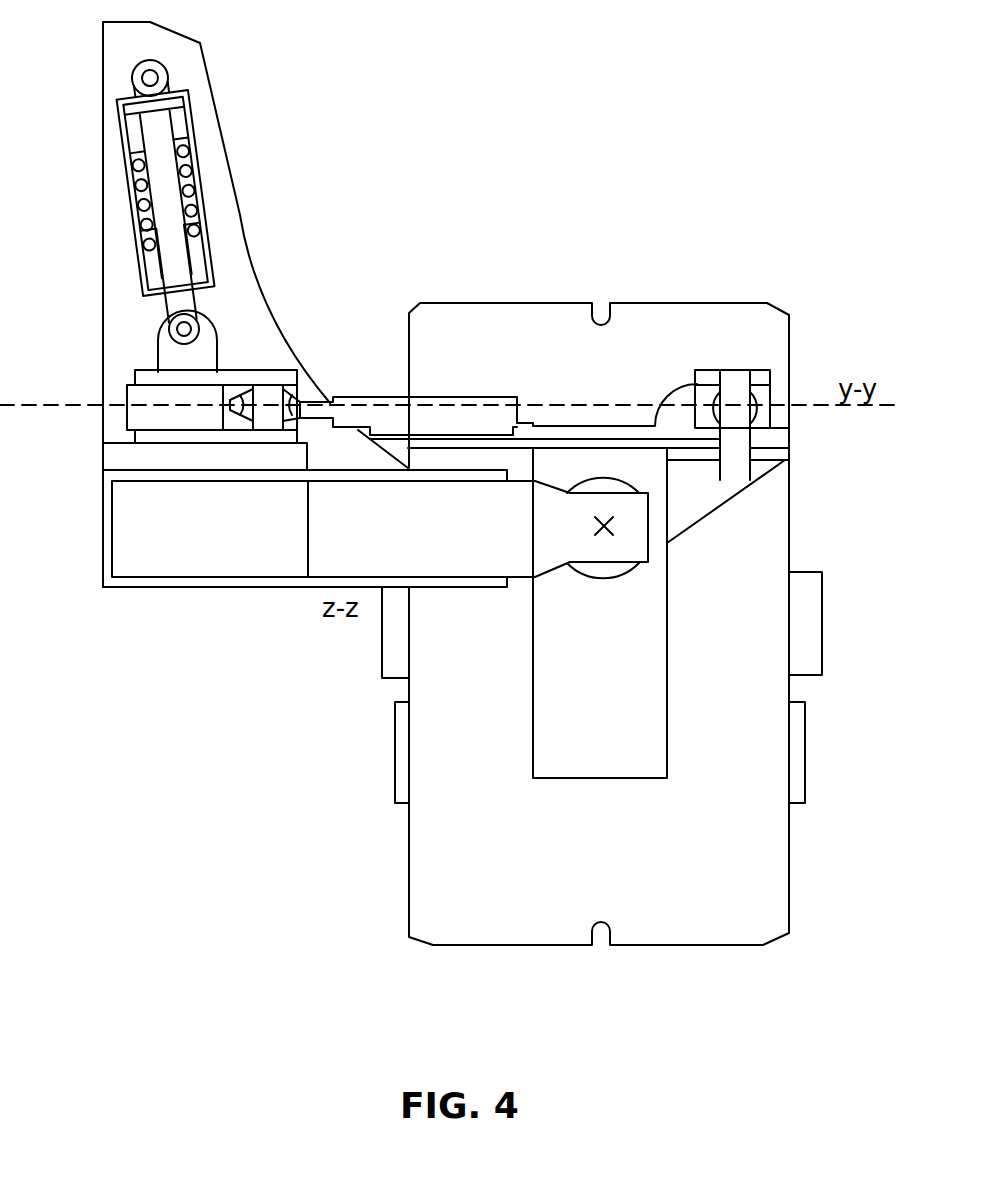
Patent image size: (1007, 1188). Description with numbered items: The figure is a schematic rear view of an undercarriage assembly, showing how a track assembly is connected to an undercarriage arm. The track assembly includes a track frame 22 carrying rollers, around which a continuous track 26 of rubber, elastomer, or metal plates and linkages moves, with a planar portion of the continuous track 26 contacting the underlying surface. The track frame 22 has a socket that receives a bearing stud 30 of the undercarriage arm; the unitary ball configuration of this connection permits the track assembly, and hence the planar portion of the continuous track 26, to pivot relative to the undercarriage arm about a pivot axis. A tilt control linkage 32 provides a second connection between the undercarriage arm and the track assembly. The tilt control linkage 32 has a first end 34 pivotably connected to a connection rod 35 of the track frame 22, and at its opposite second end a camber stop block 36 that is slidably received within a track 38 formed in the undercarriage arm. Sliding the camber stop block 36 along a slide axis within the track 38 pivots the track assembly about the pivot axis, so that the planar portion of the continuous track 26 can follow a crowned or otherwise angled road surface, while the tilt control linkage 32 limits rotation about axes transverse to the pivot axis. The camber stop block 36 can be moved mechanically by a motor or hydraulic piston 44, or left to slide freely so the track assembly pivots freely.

The track frame 22 is at (533, 772).
The continuous track 26 is at (453, 303).
The bearing stud 30 is at (721, 553).
The tilt control linkage 32 is at (400, 397).
The first end 34 is at (777, 438).
The connection rod 35 is at (735, 383).
The camber stop block 36 is at (123, 410).
The track 38 is at (117, 390).
The hydraulic piston 44 is at (197, 173).